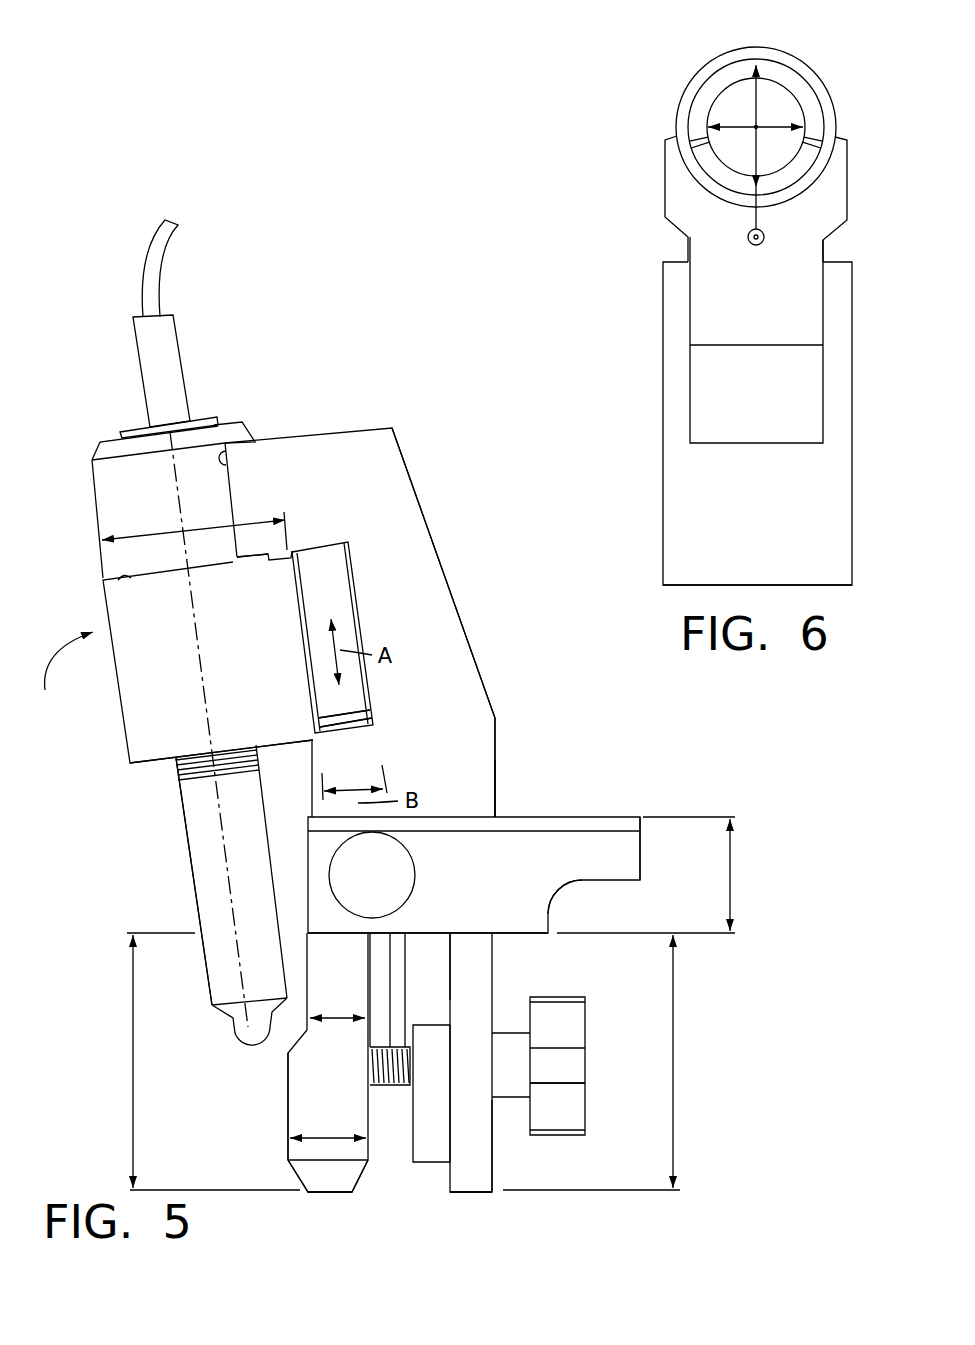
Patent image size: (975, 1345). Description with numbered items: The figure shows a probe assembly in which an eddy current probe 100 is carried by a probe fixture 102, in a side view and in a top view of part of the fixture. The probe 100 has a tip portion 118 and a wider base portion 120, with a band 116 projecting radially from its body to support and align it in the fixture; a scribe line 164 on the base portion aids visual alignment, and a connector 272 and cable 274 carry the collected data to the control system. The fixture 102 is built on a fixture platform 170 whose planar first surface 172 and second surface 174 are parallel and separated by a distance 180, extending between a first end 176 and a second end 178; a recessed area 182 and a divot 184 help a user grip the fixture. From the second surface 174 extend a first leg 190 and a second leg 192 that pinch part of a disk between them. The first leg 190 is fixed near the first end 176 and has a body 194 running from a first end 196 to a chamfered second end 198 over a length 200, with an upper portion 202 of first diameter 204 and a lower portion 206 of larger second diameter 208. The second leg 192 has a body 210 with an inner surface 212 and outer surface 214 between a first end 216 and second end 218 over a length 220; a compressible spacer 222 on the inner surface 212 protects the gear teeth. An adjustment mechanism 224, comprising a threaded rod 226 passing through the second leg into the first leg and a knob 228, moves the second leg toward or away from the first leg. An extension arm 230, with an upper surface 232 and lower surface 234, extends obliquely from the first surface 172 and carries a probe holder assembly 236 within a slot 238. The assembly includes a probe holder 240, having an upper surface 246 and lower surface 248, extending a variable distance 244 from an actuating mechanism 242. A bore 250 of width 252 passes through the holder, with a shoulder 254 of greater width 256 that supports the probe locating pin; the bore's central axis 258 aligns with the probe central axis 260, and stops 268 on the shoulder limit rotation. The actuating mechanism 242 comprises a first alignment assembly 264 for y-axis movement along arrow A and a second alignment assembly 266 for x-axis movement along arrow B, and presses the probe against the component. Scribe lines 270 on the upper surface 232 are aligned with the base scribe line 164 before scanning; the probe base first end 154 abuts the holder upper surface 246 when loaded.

In FIG. 5, the eddy current probe 100 is at (107, 473).
In FIG. 5, the probe fixture 102 is at (383, 335).
In FIG. 5, the band 116 is at (190, 782).
In FIG. 5, the tip portion 118 is at (240, 1027).
In FIG. 5, the base portion 120 is at (128, 494).
In FIG. 5, the first end 154 is at (215, 570).
In FIG. 5, the scribe line 164 is at (232, 425).
In FIG. 5, the fixture platform 170 is at (517, 840).
In FIG. 6, the fixture platform 170 is at (662, 490).
In FIG. 5, the first surface 172 is at (622, 800).
In FIG. 6, the first surface 172 is at (757, 550).
In FIG. 5, the second surface 174 is at (527, 933).
In FIG. 5, the first end 176 is at (303, 870).
In FIG. 5, the second end 178 is at (641, 855).
In FIG. 5, the distance 180 is at (726, 870).
In FIG. 5, the recessed area 182 is at (563, 893).
In FIG. 5, the divot 184 is at (372, 875).
In FIG. 5, the first leg 190 is at (310, 1105).
In FIG. 5, the second leg 192 is at (480, 1115).
In FIG. 5, the body 194 is at (310, 1085).
In FIG. 5, the first end 196 is at (330, 950).
In FIG. 5, the second end 198 is at (330, 1193).
In FIG. 5, the length 200 is at (132, 1075).
In FIG. 5, the upper portion 202 is at (308, 978).
In FIG. 5, the first diameter 204 is at (305, 1020).
In FIG. 5, the lower portion 206 is at (300, 1125).
In FIG. 5, the second diameter 208 is at (315, 1165).
In FIG. 5, the body 210 is at (500, 995).
In FIG. 5, the inner surface 212 is at (442, 1185).
In FIG. 5, the outer surface 214 is at (500, 1178).
In FIG. 5, the first end 216 is at (490, 1196).
In FIG. 5, the second end 218 is at (470, 938).
In FIG. 5, the length 220 is at (668, 1062).
In FIG. 5, the spacer 222 is at (432, 1155).
In FIG. 5, the adjustment mechanism 224 is at (697, 1069).
In FIG. 5, the threaded rod 226 is at (373, 1055).
In FIG. 5, the knob 228 is at (570, 1105).
In FIG. 5, the extension arm 230 is at (418, 595).
In FIG. 6, the extension arm 230 is at (712, 372).
In FIG. 5, the upper surface 232 is at (330, 430).
In FIG. 6, the upper surface 232 is at (720, 300).
In FIG. 5, the lower surface 234 is at (462, 812).
In FIG. 5, the probe holder assembly 236 is at (70, 661).
In FIG. 5, the slot 238 is at (372, 733).
In FIG. 5, the probe holder 240 is at (165, 695).
In FIG. 6, the probe holder 240 is at (668, 182).
In FIG. 5, the actuating mechanism 242 is at (318, 565).
In FIG. 5, the distance 244 is at (140, 535).
In FIG. 5, the upper surface 246 is at (120, 585).
In FIG. 6, the upper surface 246 is at (668, 145).
In FIG. 5, the lower surface 248 is at (152, 765).
In FIG. 6, the bore 250 is at (765, 115).
In FIG. 6, the width 252 is at (763, 117).
In FIG. 6, the shoulder 254 is at (742, 67).
In FIG. 6, the width 256 is at (712, 66).
In FIG. 5, the central axis 258 is at (222, 660).
In FIG. 6, the central axis 258 is at (756, 97).
In FIG. 5, the probe central axis 260 is at (172, 852).
In FIG. 5, the first alignment assembly 264 is at (365, 730).
In FIG. 5, the second alignment assembly 266 is at (345, 723).
In FIG. 6, the stops 268 is at (782, 260).
In FIG. 6, the scribe lines 270 is at (748, 233).
In FIG. 5, the connector 272 is at (183, 357).
In FIG. 5, the cable 274 is at (160, 262).